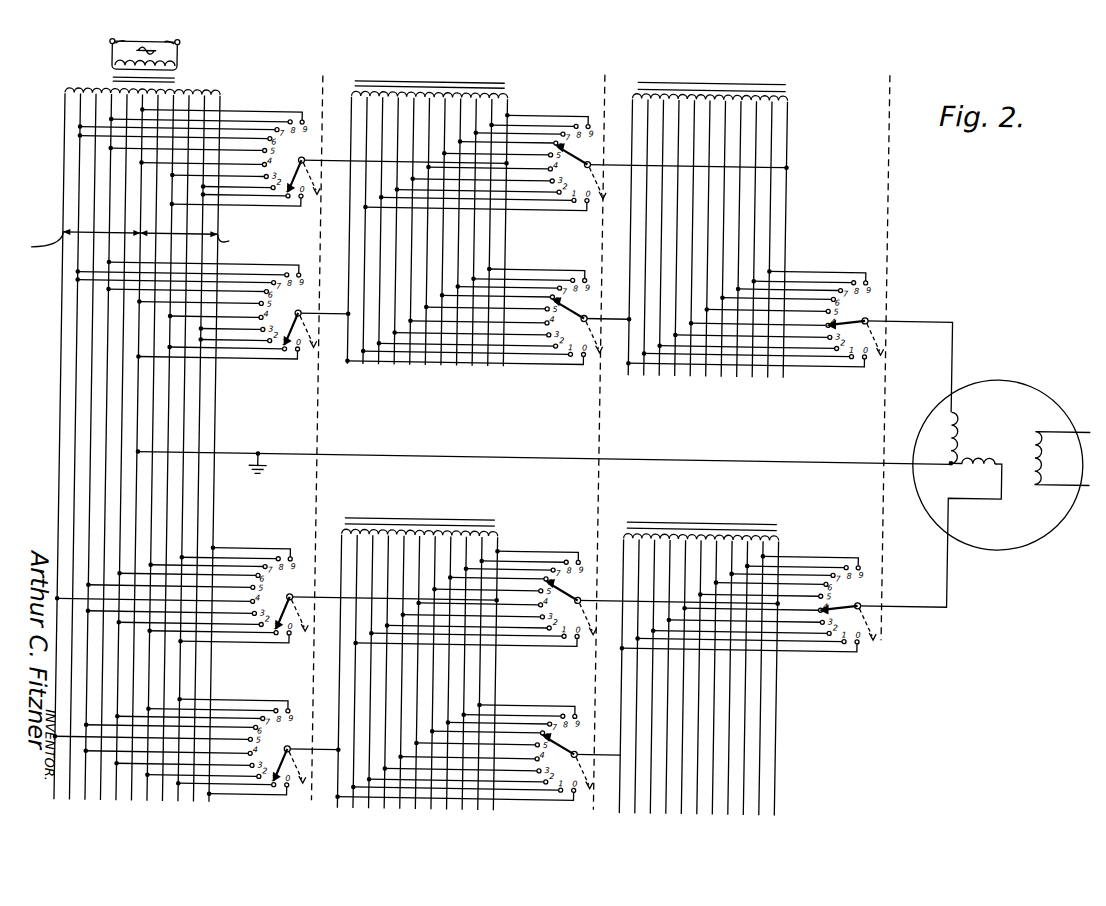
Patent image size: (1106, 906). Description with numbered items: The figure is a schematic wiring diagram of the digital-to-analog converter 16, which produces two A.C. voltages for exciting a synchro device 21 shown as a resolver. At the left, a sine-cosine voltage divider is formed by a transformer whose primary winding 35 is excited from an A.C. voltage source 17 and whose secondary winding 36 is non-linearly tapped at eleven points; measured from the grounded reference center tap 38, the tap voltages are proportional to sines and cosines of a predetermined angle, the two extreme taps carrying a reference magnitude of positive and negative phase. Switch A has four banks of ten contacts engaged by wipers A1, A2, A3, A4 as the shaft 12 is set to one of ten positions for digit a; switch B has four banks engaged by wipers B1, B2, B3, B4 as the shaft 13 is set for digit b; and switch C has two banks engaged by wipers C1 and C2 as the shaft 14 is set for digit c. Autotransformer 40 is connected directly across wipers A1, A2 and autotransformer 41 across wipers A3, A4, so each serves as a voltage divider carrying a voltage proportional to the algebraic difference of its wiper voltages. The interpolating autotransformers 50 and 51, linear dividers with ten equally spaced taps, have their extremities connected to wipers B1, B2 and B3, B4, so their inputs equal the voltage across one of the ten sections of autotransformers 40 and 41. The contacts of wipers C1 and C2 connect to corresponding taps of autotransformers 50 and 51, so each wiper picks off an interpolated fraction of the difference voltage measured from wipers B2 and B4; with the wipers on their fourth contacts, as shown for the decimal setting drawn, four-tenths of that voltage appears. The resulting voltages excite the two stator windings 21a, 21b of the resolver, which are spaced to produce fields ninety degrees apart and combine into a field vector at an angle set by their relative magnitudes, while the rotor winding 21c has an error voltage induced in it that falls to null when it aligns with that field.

The shaft 12 is at (317, 84).
The shaft 13 is at (599, 87).
The shaft 14 is at (884, 125).
The digital-to-analog converter 16 is at (790, 243).
The A.C. voltage source 17 is at (165, 53).
The synchro device 21 is at (1001, 453).
The first stator winding 21a is at (958, 426).
The second stator winding 21b is at (985, 448).
The rotor winding 21c is at (1031, 482).
The primary winding 35 is at (106, 66).
The secondary winding 36 is at (128, 439).
The center tap 38 is at (137, 381).
The autotransformer 40 is at (502, 99).
The autotransformer 41 is at (499, 537).
The autotransformer 50 is at (782, 97).
The autotransformer 51 is at (780, 537).
The wiper A1 is at (310, 186).
The wiper A2 is at (309, 339).
The wiper A3 is at (305, 623).
The wiper A4 is at (306, 775).
The wiper B1 is at (587, 161).
The wiper B2 is at (586, 315).
The wiper B3 is at (584, 597).
The wiper B4 is at (583, 751).
The wiper C1 is at (860, 314).
The wiper C2 is at (857, 599).